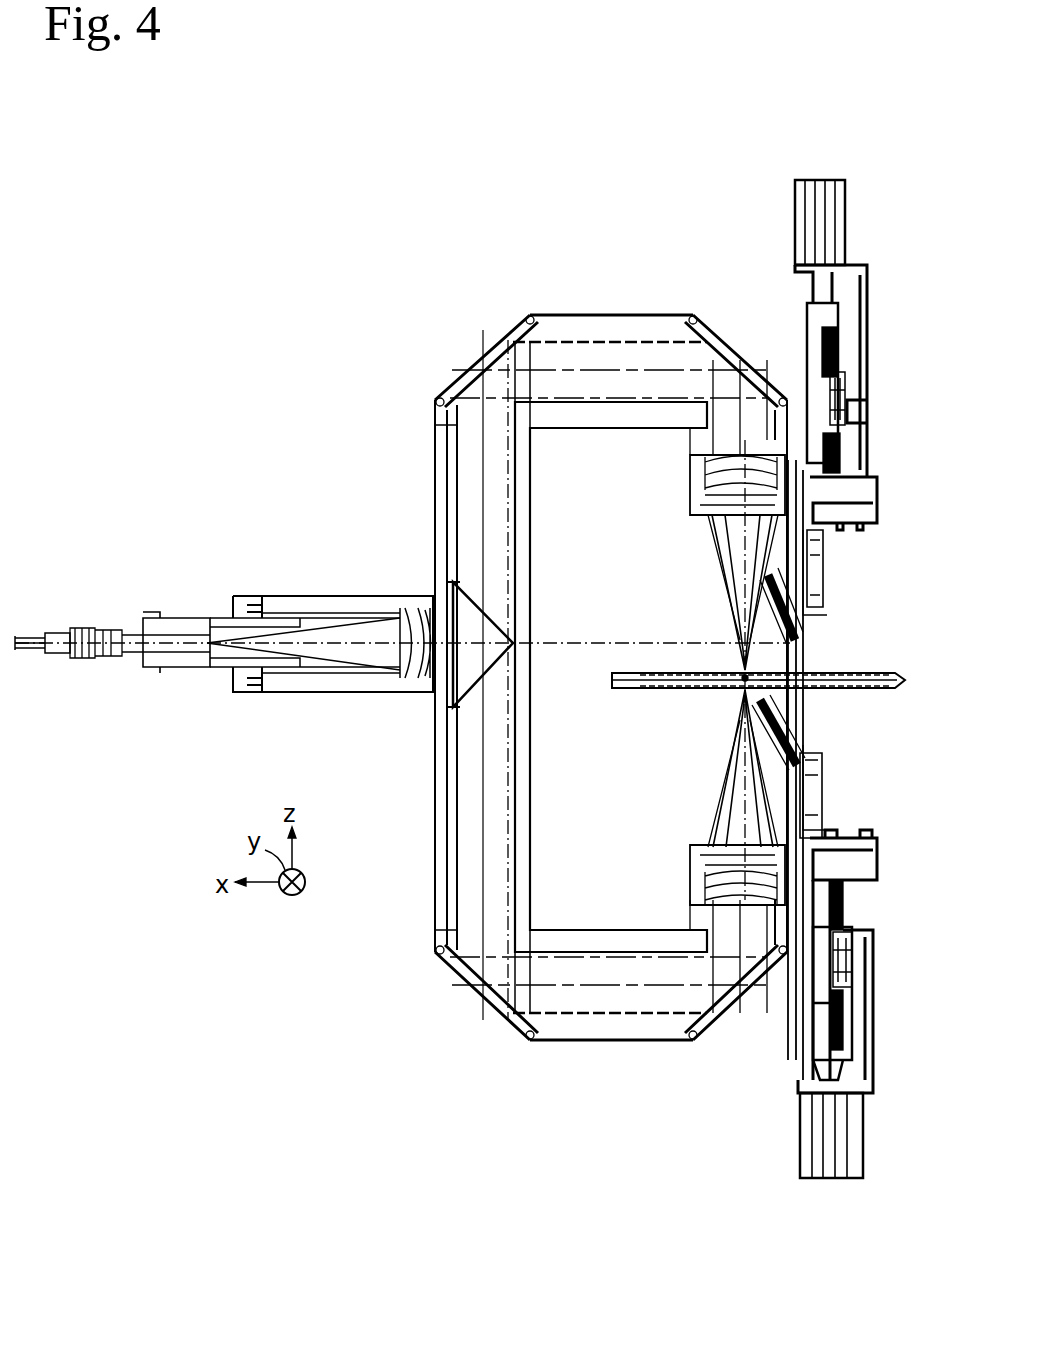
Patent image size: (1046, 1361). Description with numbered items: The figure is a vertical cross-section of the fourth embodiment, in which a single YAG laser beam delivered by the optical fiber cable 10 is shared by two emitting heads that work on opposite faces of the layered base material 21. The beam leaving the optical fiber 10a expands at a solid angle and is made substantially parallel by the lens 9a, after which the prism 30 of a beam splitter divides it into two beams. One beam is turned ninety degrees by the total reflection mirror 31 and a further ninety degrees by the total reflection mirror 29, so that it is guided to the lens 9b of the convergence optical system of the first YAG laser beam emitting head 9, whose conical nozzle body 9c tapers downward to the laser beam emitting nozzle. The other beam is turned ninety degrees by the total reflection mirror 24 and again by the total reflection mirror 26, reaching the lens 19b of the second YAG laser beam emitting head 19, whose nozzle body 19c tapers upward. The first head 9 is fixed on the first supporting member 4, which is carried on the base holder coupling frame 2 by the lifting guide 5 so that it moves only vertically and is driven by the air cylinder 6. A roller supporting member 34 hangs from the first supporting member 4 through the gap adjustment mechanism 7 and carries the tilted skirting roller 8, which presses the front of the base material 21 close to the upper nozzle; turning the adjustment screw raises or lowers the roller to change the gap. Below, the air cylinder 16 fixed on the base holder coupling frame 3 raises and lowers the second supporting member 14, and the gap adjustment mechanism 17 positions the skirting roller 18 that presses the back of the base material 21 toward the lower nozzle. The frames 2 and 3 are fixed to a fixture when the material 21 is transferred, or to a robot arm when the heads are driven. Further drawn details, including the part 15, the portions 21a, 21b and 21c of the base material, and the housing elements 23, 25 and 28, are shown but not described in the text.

The base holder coupling frame 2 is at (850, 297).
The base holder coupling frame 3 is at (865, 1052).
The first supporting member 4 is at (815, 337).
The lifting guide 5 is at (822, 388).
The air cylinder 6 is at (800, 222).
The gap adjustment mechanism 7 is at (822, 565).
The skirting roller 8 is at (745, 625).
The first YAG laser beam emitting head 9 is at (696, 562).
The lens of an optical system 9a is at (405, 668).
The lens of a convergence optical system 9b is at (705, 475).
The nozzle body 9c is at (720, 568).
The optical fiber cable 10 is at (30, 630).
The optical fiber 10a is at (172, 640).
The second supporting member 14 is at (815, 992).
The lower actuator 15 is at (822, 950).
The air cylinder 16 is at (805, 1150).
The gap adjustment mechanism 17 is at (830, 800).
The skirting roller 18 is at (740, 720).
The second YAG laser beam emitting head 19 is at (689, 797).
The lens of a convergence optical system 19b is at (705, 888).
The nozzle body 19c is at (720, 752).
The layered base material 21 is at (762, 693).
The sample plate upper surface 21a is at (840, 675).
The sample plate lower surface 21b is at (800, 690).
The sample plate edge 21c is at (790, 690).
The housing side wall 23 is at (440, 520).
The total reflection mirror 24 is at (470, 982).
The bottom wall 25 is at (550, 1040).
The total reflection mirror 26 is at (718, 1045).
The top wall 28 is at (605, 325).
The total reflection mirror 29 is at (742, 350).
The prism 30 is at (495, 615).
The total reflection mirror 31 is at (478, 358).
The roller supporting member 34 is at (745, 660).